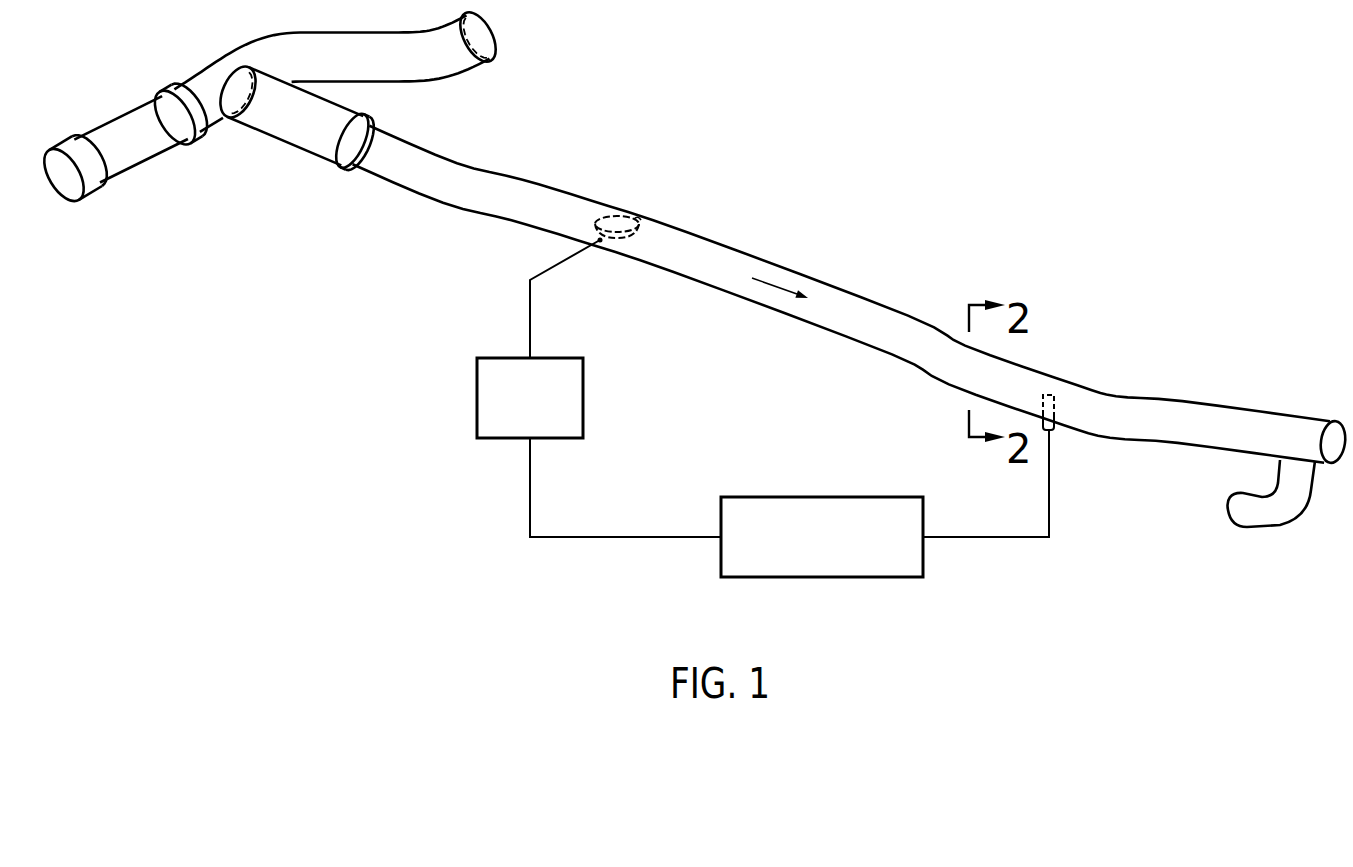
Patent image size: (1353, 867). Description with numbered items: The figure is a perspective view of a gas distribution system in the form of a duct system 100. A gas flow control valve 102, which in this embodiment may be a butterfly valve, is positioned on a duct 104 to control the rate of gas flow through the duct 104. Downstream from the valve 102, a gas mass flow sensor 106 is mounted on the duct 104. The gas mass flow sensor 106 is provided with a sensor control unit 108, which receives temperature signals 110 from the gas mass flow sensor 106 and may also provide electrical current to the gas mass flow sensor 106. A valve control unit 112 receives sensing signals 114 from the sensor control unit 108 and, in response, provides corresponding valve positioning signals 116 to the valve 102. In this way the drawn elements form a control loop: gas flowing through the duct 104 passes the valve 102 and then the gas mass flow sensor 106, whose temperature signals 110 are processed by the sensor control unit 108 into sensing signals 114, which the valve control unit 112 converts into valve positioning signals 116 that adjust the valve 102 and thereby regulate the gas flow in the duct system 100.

The duct system 100 is at (945, 115).
The gas flow control valve 102 is at (618, 221).
The duct 104 is at (418, 182).
The gas mass flow sensor 106 is at (1053, 430).
The sensor control unit 108 is at (822, 578).
The temperature signals 110 is at (993, 538).
The valve control unit 112 is at (477, 397).
The sensing signals 114 is at (633, 538).
The valve positioning signals 116 is at (528, 323).